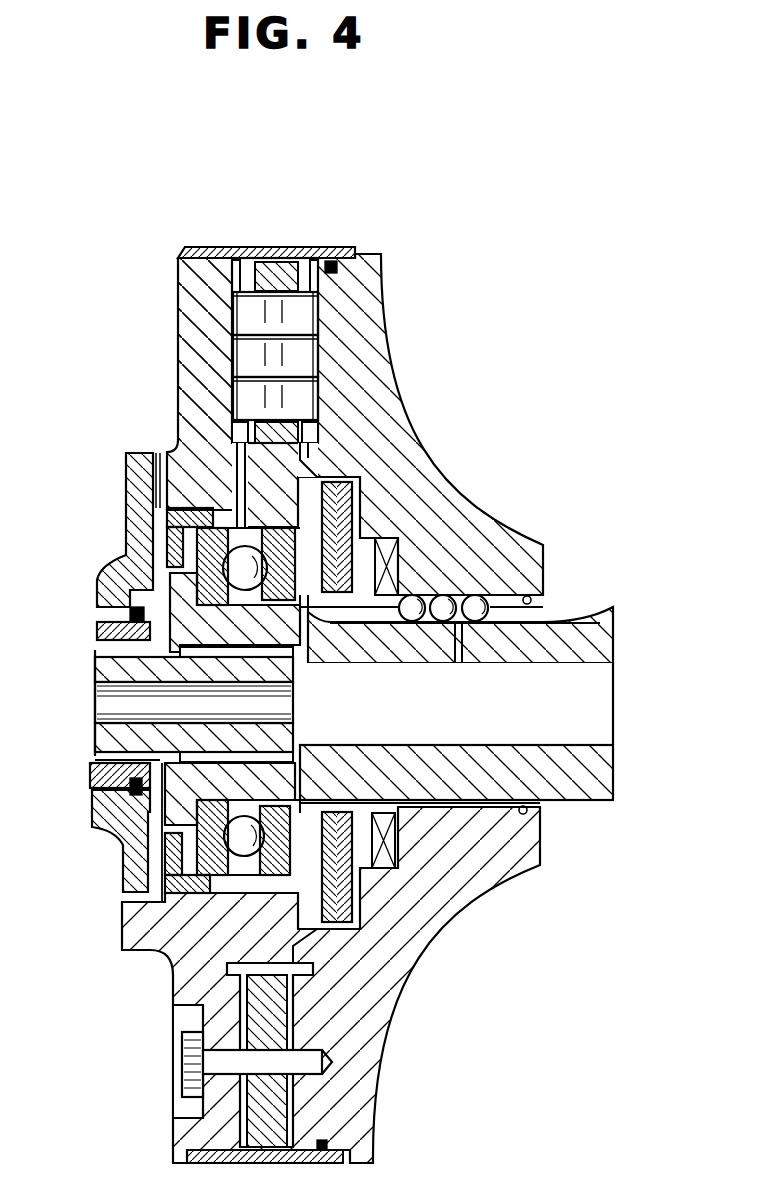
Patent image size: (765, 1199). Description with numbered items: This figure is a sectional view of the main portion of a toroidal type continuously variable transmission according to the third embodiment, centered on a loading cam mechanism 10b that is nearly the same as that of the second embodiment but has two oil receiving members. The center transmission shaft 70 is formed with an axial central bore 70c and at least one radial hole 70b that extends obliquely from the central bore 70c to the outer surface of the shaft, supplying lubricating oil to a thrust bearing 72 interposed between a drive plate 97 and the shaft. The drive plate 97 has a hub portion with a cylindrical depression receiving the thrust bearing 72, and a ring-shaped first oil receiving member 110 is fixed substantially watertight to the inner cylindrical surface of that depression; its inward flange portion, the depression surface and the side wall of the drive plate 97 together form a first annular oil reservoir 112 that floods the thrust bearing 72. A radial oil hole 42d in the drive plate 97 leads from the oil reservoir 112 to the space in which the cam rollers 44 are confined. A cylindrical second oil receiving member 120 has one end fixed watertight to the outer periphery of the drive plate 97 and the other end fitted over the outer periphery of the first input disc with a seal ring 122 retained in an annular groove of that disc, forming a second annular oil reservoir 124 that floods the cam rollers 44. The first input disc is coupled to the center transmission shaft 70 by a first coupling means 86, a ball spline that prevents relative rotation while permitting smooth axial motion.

The loading cam mechanism 10b is at (408, 296).
The drive plate 97 is at (185, 356).
The second oil receiving member 120 is at (282, 257).
The seal ring 122 is at (334, 257).
The second annular oil reservoir 124 is at (255, 258).
The cam rollers 44 is at (237, 322).
The radial oil hole 42d is at (178, 425).
The first oil receiving member 110 is at (167, 525).
The first annular oil reservoir 112 is at (190, 553).
The thrust bearing 72 is at (200, 597).
The first coupling means 86 is at (480, 592).
The radial hole 70b is at (313, 664).
The axial central bore 70c is at (545, 721).
The center transmission shaft 70 is at (603, 787).